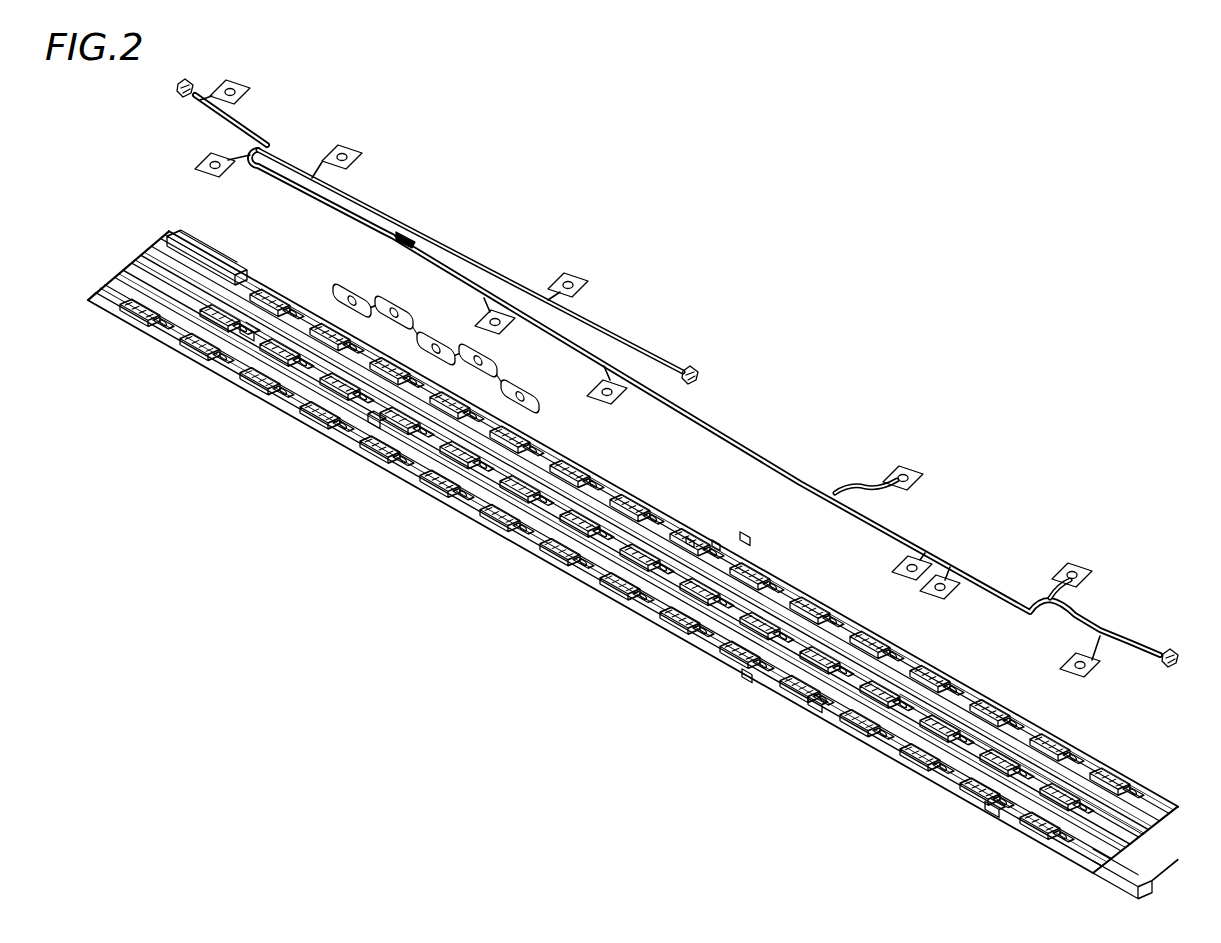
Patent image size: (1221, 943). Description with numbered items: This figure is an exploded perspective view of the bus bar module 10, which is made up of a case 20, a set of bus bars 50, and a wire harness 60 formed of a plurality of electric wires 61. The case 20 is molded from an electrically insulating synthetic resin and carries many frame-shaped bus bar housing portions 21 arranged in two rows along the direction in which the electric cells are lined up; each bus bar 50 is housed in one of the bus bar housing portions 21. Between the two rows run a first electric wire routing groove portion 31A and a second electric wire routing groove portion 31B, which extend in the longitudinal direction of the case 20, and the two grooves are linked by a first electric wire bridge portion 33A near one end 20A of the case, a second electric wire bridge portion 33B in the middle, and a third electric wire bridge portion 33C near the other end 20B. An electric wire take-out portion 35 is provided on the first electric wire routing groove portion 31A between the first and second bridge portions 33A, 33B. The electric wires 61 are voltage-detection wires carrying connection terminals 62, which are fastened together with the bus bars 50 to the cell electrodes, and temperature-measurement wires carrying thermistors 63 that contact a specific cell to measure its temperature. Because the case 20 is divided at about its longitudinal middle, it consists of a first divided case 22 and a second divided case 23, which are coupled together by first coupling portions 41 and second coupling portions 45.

The bus bar module 10 is at (822, 312).
The case 20 is at (578, 596).
The one end of the case 20A is at (145, 262).
The other end of the case 20B is at (1123, 843).
The bus bar housing portion 21 is at (260, 262).
The first divided case 22 is at (705, 440).
The second divided case 23 is at (950, 650).
The first electric wire routing groove portion 31A is at (540, 548).
The second electric wire routing groove portion 31B is at (606, 460).
The first electric wire bridge portion 33A is at (250, 338).
The second electric wire bridge portion 33B is at (813, 700).
The third electric wire bridge portion 33C is at (987, 803).
The electric wire take-out portion 35 is at (366, 430).
The first coupling portion 41 is at (745, 536).
The second coupling portion 45 is at (688, 538).
The bus bar 50 is at (228, 268).
The wire harness 60 is at (784, 448).
The electric wire 61 is at (645, 356).
The connection terminal 62 is at (252, 90).
The thermistor 63 is at (166, 100).